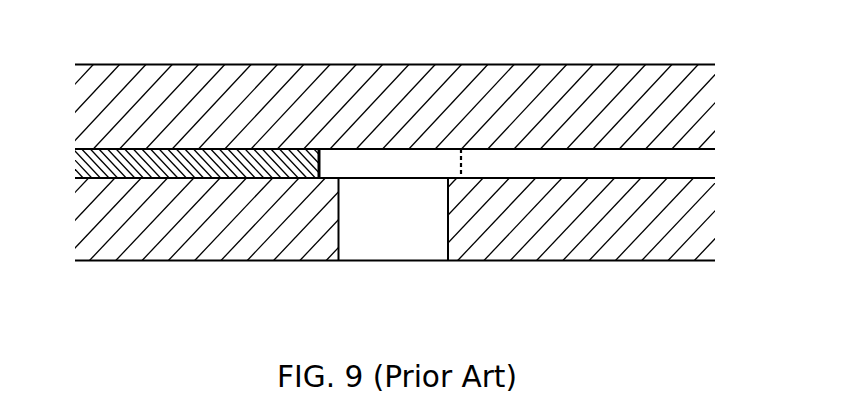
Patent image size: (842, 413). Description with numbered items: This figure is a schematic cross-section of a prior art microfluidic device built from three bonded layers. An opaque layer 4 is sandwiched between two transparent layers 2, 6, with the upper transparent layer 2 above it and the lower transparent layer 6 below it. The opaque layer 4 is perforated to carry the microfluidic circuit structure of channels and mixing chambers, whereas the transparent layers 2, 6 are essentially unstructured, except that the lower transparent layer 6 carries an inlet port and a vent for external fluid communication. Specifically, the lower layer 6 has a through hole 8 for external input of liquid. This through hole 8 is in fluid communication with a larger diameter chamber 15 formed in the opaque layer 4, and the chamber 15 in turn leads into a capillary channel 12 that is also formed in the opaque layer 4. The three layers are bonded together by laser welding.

The transparent layer 2 is at (75, 105).
The opaque layer 4 is at (75, 165).
The transparent layer 6 is at (75, 228).
The through hole 8 is at (357, 243).
The capillary channel 12 is at (715, 162).
The chamber 15 is at (331, 161).